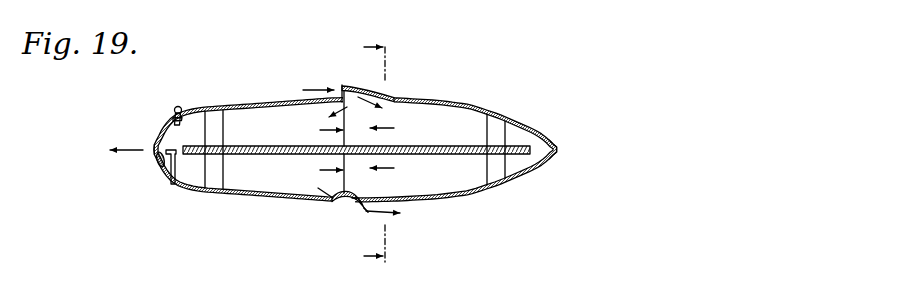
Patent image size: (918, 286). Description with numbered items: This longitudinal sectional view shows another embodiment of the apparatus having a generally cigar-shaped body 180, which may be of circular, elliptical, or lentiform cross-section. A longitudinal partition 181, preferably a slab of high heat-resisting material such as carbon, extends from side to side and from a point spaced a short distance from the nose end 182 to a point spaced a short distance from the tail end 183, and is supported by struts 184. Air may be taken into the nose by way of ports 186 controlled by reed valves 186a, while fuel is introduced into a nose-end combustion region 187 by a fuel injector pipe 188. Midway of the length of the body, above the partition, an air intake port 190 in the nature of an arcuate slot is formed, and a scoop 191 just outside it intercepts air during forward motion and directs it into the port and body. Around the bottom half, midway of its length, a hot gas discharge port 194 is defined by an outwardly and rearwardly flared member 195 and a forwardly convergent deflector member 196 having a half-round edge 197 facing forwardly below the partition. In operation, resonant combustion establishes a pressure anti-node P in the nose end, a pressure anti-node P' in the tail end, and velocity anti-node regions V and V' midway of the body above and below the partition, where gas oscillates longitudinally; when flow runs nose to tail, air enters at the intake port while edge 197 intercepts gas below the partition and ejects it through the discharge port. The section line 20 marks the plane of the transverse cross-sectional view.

The cigar-shaped body 180 is at (247, 101).
The longitudinal partition 181 is at (443, 147).
The nose end 182 is at (154, 143).
The tail end 183 is at (558, 151).
The struts 184 is at (224, 128).
The ports 186 is at (161, 165).
The reed valves 186a is at (156, 151).
The nose-end combustion region 187 is at (171, 125).
The fuel injector pipe 188 is at (179, 185).
The air intake port 190 is at (342, 87).
The scoop 191 is at (346, 88).
The hot gas discharge port 194 is at (355, 204).
The outwardly and rearwardly flared member 195 is at (363, 214).
The forwardly convergent deflector member 196 is at (355, 199).
The half-round edge 197 is at (332, 200).
The velocity anti-node region V is at (357, 131).
The velocity anti-node region V' is at (357, 170).
The pressure anti-node P is at (136, 123).
The pressure anti-node P' is at (574, 116).
The section line 20 is at (381, 154).